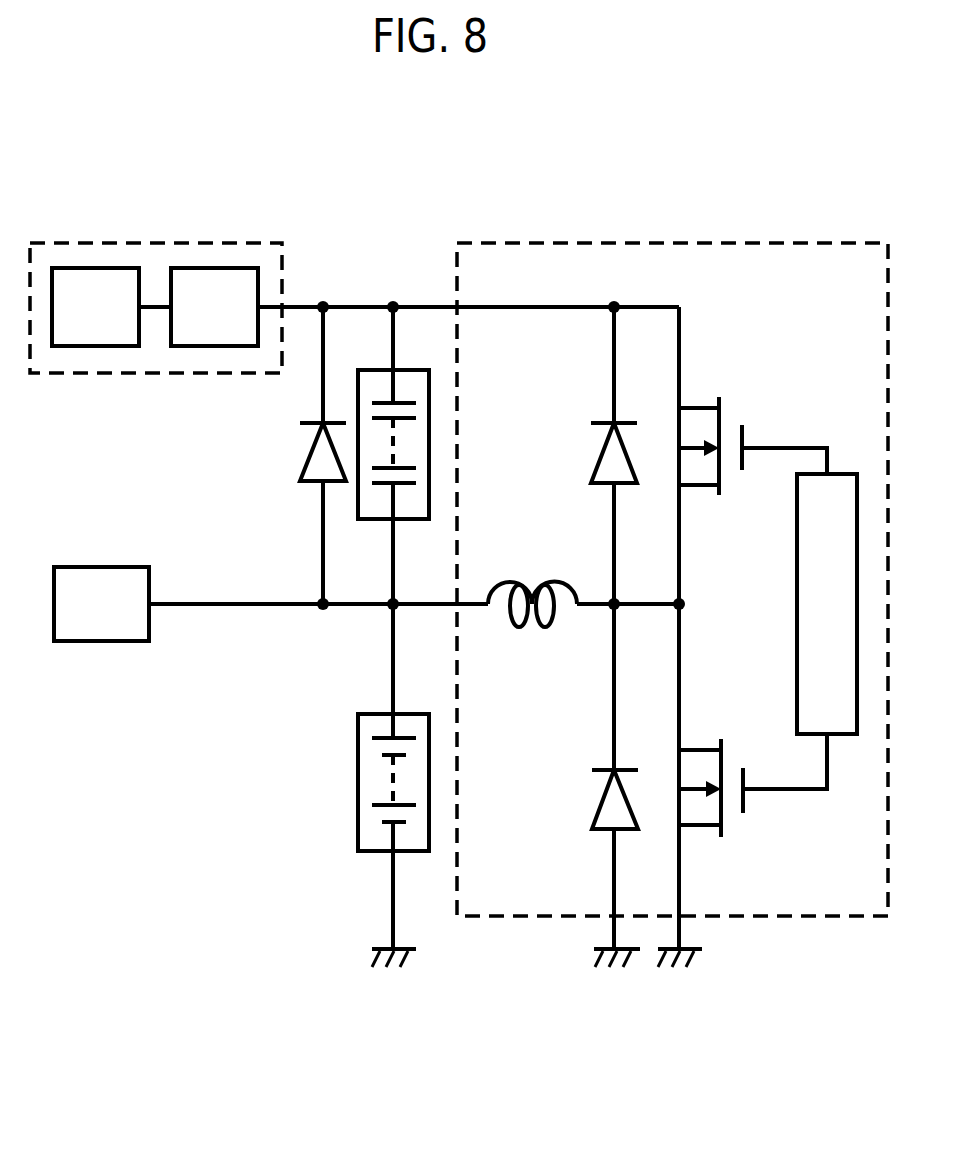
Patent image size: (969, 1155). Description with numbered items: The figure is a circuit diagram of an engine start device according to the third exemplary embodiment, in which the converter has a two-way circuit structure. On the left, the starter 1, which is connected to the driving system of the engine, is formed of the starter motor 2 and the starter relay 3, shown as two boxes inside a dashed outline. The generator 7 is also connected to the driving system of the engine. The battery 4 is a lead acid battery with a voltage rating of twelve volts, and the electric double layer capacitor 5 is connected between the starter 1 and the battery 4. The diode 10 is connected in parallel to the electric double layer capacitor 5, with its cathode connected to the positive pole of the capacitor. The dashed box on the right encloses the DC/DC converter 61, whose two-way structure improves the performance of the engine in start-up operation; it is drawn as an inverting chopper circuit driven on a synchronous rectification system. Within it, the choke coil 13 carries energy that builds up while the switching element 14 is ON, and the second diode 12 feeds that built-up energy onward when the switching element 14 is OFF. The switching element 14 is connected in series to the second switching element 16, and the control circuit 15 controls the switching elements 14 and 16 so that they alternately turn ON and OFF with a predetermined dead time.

The starter 1 is at (153, 375).
The starter motor 2 is at (97, 268).
The starter relay 3 is at (217, 268).
The battery 4 is at (358, 761).
The electric double layer capacitor 5 is at (410, 367).
The generator 7 is at (98, 641).
The diode 10 is at (295, 442).
The second diode 12 is at (588, 802).
The choke coil 13 is at (543, 568).
The switching element 14 is at (703, 835).
The control circuit 15 is at (843, 738).
The second switching element 16 is at (698, 398).
The DC/DC converter 61 is at (685, 242).